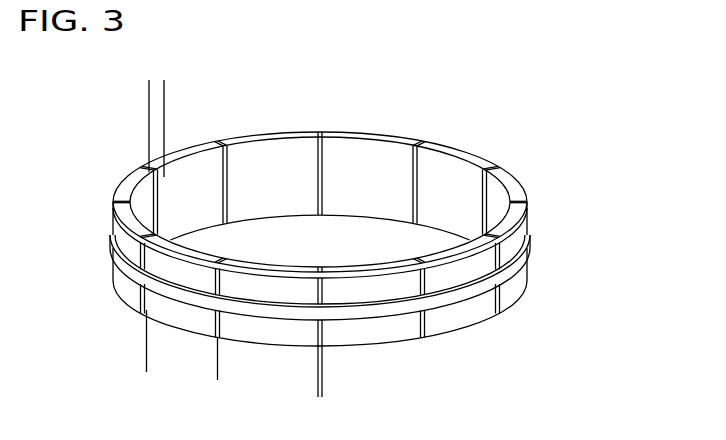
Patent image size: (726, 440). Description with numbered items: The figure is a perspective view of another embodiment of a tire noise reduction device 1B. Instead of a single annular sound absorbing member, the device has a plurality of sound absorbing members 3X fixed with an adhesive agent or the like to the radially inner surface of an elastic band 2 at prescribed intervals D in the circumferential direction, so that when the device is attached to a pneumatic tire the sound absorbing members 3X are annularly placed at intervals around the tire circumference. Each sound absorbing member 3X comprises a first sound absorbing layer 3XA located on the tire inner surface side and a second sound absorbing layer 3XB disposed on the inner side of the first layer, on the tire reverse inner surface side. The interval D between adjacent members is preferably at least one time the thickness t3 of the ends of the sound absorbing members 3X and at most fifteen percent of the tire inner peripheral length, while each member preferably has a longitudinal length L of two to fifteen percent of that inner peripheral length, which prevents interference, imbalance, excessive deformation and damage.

The tire noise reduction device 1B is at (339, 208).
The elastic band 2 is at (527, 268).
The sound absorbing member 3X is at (293, 130).
The first sound absorbing layer 3XA is at (252, 132).
The second sound absorbing layer 3XB is at (352, 187).
The thickness of ends of the sound absorbing members t3 is at (192, 98).
The length of sound absorbing member L is at (217, 378).
The interval between adjacent sound absorbing members D is at (352, 387).